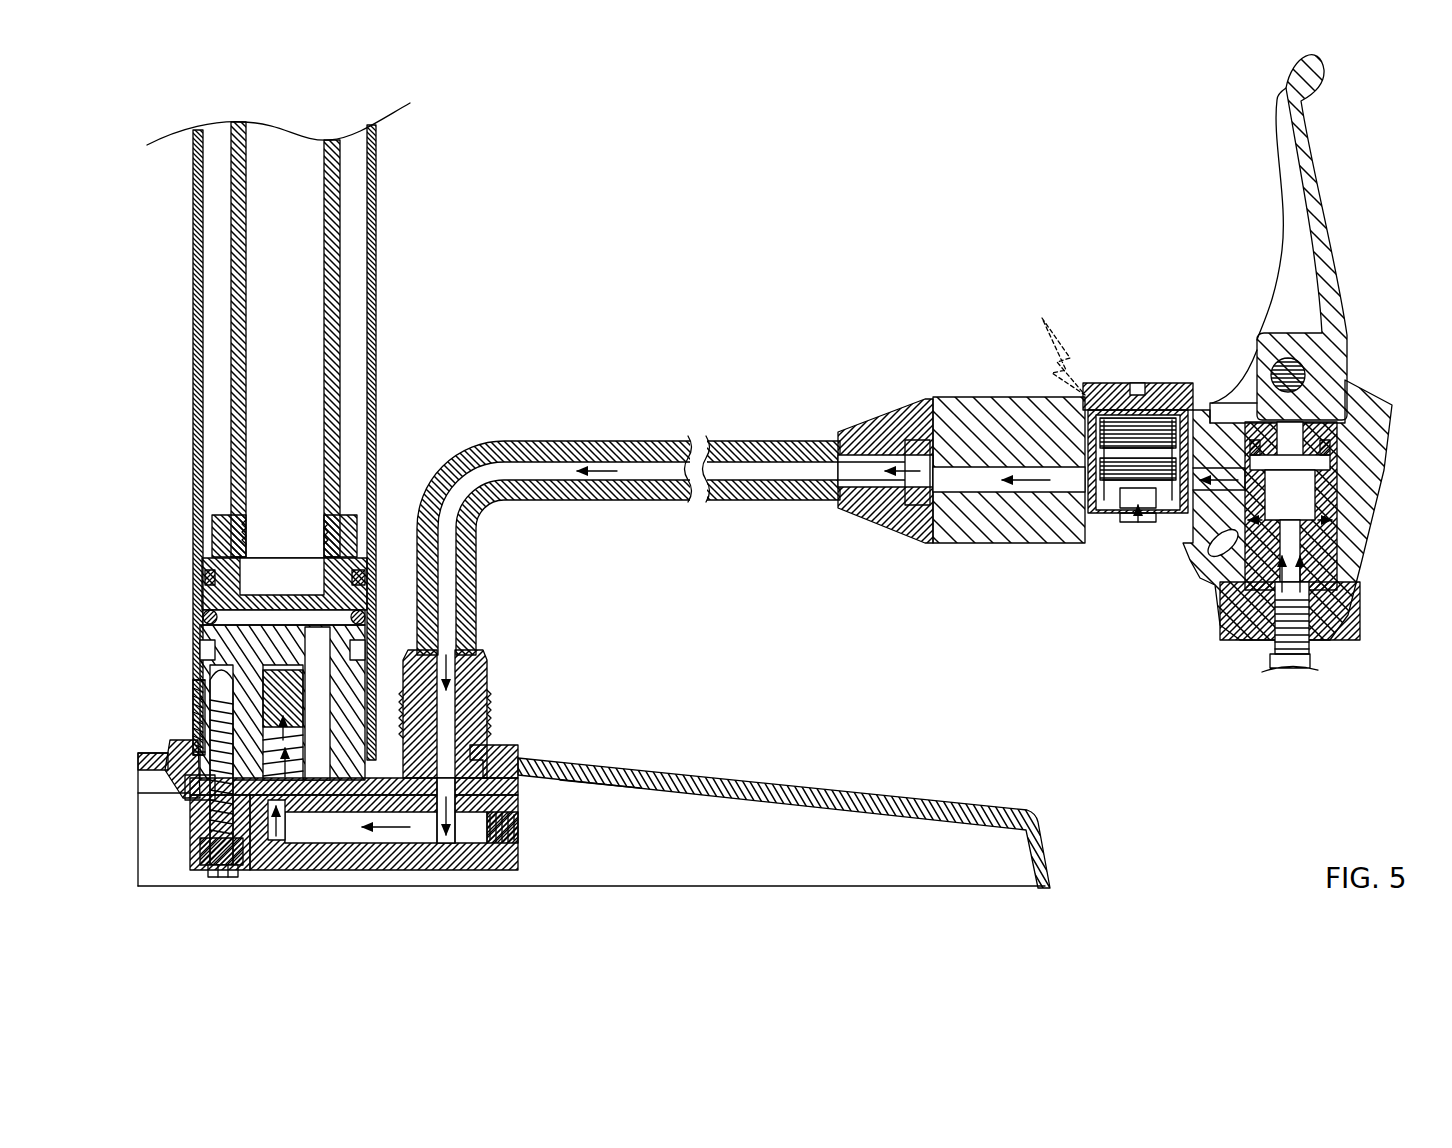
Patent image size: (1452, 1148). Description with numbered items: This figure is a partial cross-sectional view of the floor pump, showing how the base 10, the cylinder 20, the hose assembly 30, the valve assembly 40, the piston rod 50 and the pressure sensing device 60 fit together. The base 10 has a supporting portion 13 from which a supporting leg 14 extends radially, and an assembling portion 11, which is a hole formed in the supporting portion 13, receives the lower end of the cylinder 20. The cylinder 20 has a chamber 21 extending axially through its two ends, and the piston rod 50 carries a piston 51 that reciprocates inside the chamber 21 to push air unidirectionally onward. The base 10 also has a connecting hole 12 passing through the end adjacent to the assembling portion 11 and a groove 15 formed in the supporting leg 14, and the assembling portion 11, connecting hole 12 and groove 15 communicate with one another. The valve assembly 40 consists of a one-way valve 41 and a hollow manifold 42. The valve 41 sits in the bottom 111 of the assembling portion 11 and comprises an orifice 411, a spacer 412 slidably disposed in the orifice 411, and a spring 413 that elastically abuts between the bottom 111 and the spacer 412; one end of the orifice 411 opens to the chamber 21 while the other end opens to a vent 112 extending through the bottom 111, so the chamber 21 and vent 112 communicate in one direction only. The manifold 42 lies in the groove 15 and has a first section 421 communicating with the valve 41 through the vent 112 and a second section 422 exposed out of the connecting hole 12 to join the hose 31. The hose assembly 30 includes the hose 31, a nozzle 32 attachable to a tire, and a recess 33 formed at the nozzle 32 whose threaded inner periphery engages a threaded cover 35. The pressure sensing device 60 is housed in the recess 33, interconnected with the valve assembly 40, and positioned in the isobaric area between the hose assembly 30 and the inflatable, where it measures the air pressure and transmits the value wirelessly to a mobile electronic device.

The base 10 is at (594, 780).
The assembling portion 11 is at (191, 802).
The bottom 111 is at (195, 785).
The vent 112 is at (300, 812).
The connecting hole 12 is at (493, 745).
The supporting portion 13 is at (196, 735).
The supporting leg 14 is at (815, 792).
The groove 15 is at (614, 798).
The cylinder 20 is at (327, 431).
The chamber 21 is at (376, 238).
The hose assembly 30 is at (1063, 363).
The hose 31 is at (630, 500).
The nozzle 32 is at (1005, 536).
The recess 33 is at (1165, 408).
The cover 35 is at (1110, 384).
The valve assembly 40 is at (354, 856).
The valve 41 is at (253, 748).
The orifice 411 is at (265, 660).
The spacer 412 is at (260, 700).
The spring 413 is at (255, 795).
The manifold 42 is at (465, 870).
The first section 421 is at (287, 795).
The second section 422 is at (480, 720).
The piston rod 50 is at (346, 378).
The piston 51 is at (357, 520).
The pressure sensing device 60 is at (1129, 538).